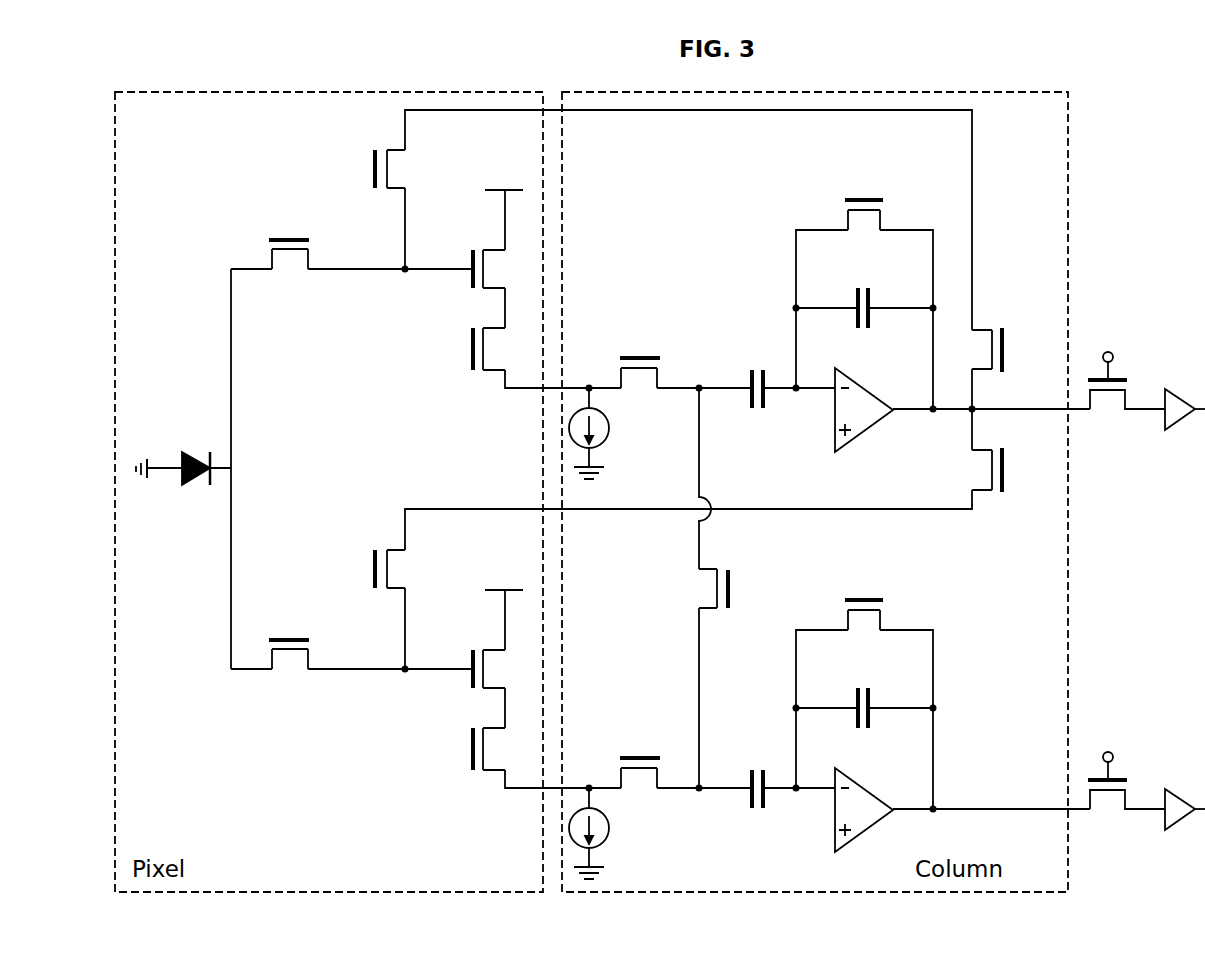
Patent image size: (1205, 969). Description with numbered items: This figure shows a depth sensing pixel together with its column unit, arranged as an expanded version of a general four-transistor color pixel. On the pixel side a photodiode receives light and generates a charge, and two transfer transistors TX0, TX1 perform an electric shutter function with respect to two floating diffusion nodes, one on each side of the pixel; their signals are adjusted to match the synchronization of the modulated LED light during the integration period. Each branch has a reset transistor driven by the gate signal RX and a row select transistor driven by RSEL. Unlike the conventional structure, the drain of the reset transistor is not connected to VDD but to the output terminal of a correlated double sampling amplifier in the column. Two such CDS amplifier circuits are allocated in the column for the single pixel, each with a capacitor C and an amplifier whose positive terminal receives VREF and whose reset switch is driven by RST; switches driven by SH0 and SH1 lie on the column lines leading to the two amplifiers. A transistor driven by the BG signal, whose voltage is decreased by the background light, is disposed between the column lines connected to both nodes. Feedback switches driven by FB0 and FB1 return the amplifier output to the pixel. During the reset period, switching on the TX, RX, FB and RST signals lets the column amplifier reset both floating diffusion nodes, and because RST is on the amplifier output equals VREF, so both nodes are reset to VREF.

The reset transistor gate signal RX is at (375, 169).
The transfer transistor TX0 is at (289, 240).
The transfer transistor TX1 is at (289, 640).
The row select signal RSEL is at (473, 349).
The sample-and-hold signal SH0 is at (640, 358).
The sample-and-hold signal SH1 is at (640, 758).
The background light signal BG is at (728, 589).
The capacitor C is at (842, 534).
The reset signal RST is at (864, 200).
The reference voltage VREF is at (835, 430).
The feedback signal FB0 is at (1002, 349).
The feedback signal FB1 is at (1002, 469).